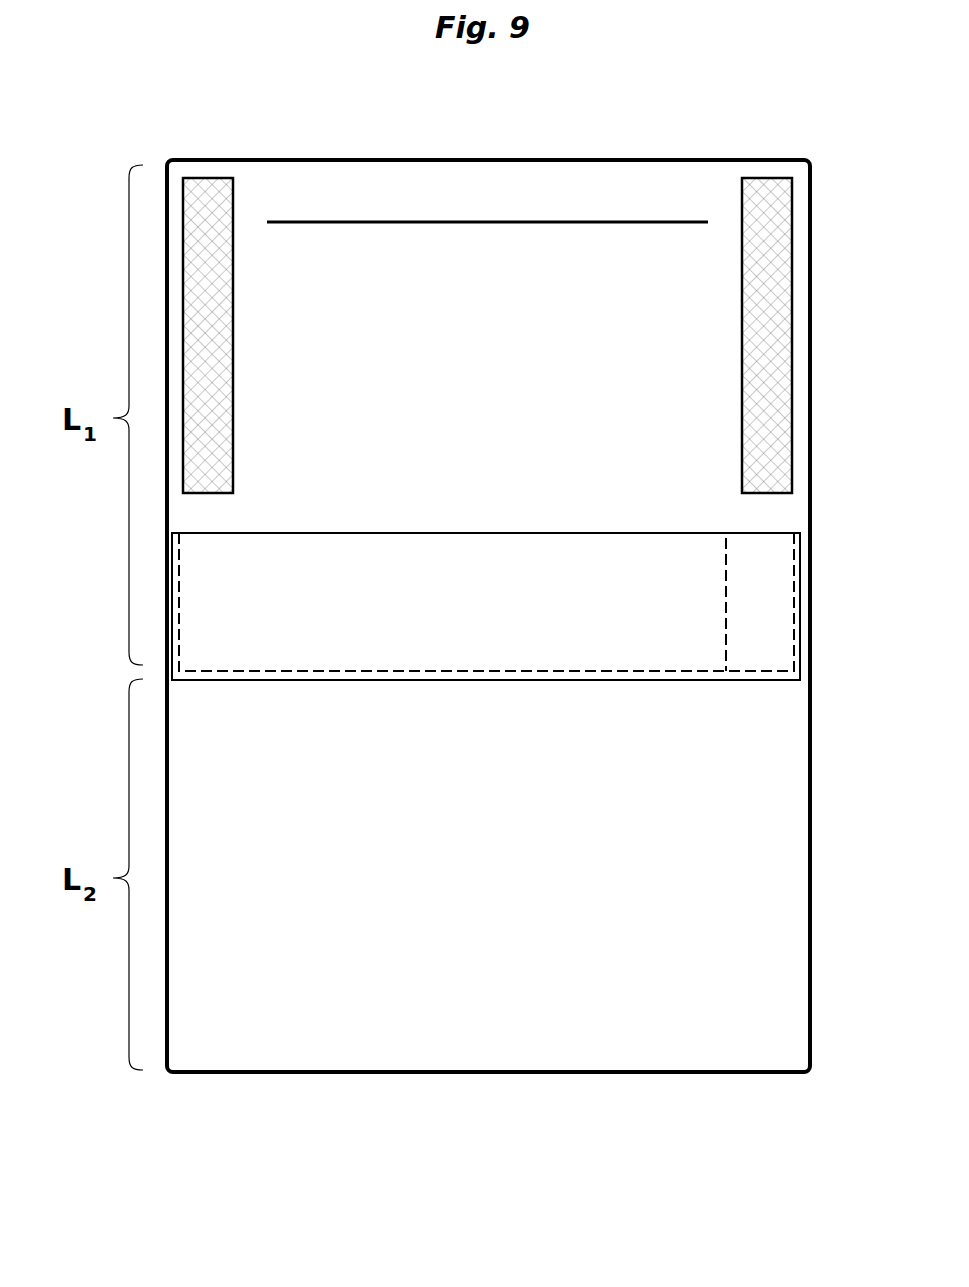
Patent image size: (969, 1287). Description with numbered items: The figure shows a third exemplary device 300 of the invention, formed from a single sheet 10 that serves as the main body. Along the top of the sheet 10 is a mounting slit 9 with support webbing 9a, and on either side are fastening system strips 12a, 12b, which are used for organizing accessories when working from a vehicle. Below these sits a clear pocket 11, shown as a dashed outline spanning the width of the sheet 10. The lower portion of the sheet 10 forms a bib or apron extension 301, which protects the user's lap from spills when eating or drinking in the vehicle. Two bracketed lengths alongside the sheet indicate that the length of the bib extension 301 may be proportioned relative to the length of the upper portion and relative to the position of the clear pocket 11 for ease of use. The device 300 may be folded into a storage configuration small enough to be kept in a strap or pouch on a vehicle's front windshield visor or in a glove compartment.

The third exemplary device 300 is at (518, 615).
The single sheet 10 is at (356, 163).
The mounting slit 9 is at (563, 213).
The support webbing 9a is at (478, 176).
The fastening system strip 12a is at (207, 172).
The fastening system strip 12b is at (777, 172).
The clear pocket 11 is at (693, 601).
The bib extension 301 is at (782, 940).